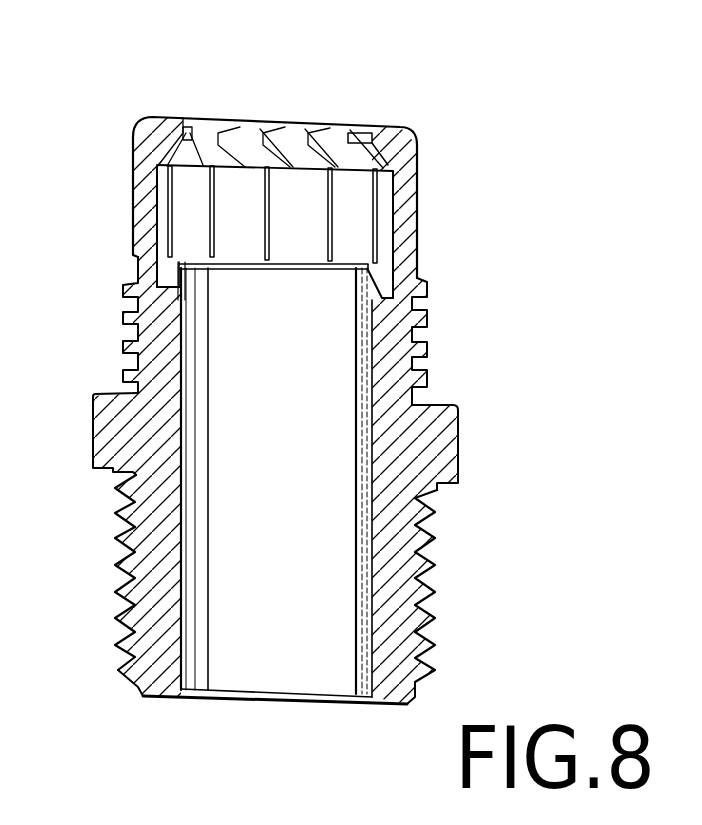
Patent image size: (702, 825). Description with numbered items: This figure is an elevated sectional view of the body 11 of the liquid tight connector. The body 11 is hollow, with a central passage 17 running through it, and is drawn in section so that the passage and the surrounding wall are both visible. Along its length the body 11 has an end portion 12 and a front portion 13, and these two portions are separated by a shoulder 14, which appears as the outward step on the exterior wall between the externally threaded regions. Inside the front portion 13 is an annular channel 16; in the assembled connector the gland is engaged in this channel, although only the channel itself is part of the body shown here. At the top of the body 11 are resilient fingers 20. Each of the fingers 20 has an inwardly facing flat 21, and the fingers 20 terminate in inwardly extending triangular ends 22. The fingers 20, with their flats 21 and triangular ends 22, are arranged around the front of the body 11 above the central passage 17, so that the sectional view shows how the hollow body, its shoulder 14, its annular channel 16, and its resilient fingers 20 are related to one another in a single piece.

The body 11 is at (428, 338).
The end portion 12 is at (146, 537).
The front portion 13 is at (123, 312).
The shoulder 14 is at (457, 447).
The annular channel 16 is at (392, 290).
The central passage 17 is at (320, 672).
The resilient fingers 20 is at (417, 173).
The inwardly facing flats 21 is at (183, 197).
The triangular ends 22 is at (375, 127).